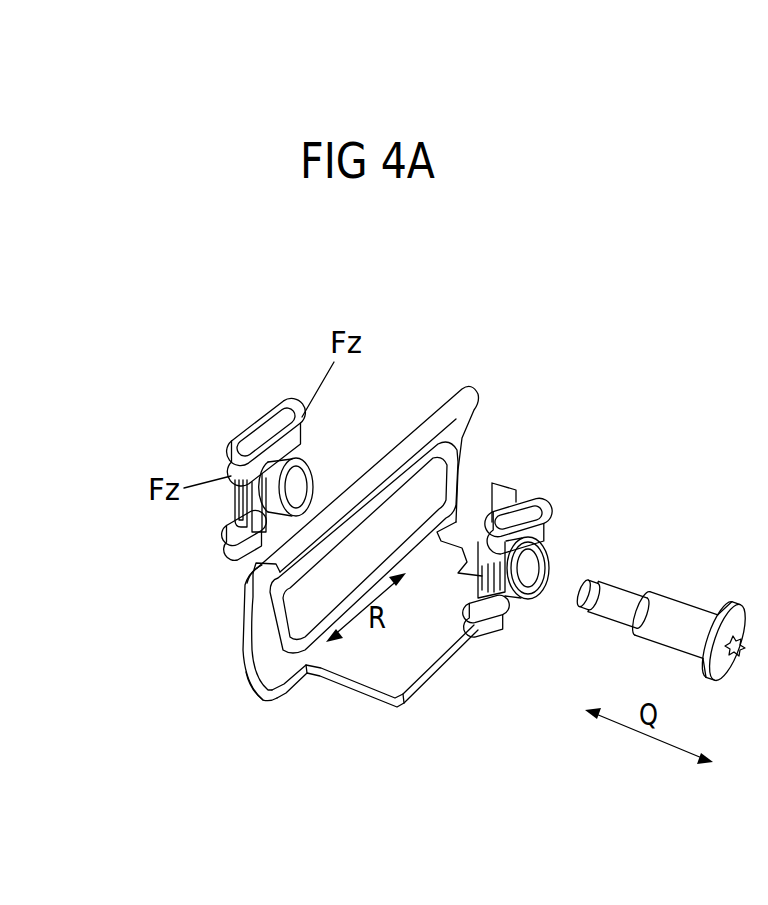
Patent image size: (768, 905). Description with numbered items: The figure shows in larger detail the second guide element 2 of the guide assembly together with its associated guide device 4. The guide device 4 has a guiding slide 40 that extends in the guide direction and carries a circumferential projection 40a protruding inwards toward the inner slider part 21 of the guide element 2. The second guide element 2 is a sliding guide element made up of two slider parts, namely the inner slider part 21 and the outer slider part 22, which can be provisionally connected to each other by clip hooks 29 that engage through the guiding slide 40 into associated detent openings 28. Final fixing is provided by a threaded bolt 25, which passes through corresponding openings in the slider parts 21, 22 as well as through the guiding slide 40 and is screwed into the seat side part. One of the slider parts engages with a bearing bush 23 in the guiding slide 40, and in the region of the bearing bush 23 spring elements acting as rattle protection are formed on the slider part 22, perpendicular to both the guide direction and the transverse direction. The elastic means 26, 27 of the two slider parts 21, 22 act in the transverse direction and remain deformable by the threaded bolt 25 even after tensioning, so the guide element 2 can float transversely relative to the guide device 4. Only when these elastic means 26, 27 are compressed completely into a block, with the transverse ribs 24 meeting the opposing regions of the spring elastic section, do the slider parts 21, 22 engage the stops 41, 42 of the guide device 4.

The second guide element 2 is at (537, 447).
The guide device 4 is at (429, 418).
The inner slider part 21 is at (547, 524).
The outer slider part 22 is at (268, 408).
The bearing bush 23 is at (305, 485).
The transverse ribs 24 is at (281, 396).
The threaded bolt 25 is at (632, 603).
The elastic means 26 is at (528, 506).
The elastic means 27 is at (247, 440).
The detent openings 28 is at (490, 582).
The clip hooks 29 is at (249, 560).
The guiding slide 40 is at (245, 667).
The circumferential projection 40a is at (277, 650).
The stop 41 is at (457, 428).
The stop 42 is at (243, 618).